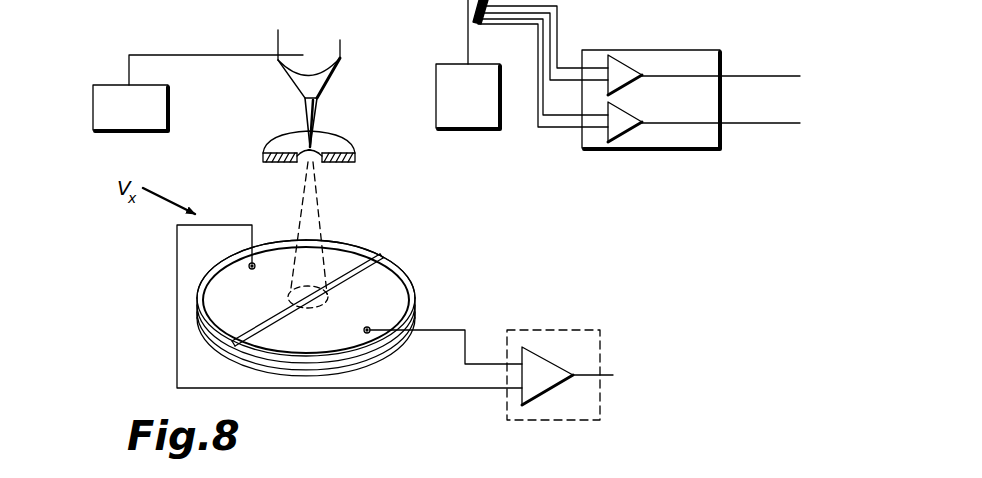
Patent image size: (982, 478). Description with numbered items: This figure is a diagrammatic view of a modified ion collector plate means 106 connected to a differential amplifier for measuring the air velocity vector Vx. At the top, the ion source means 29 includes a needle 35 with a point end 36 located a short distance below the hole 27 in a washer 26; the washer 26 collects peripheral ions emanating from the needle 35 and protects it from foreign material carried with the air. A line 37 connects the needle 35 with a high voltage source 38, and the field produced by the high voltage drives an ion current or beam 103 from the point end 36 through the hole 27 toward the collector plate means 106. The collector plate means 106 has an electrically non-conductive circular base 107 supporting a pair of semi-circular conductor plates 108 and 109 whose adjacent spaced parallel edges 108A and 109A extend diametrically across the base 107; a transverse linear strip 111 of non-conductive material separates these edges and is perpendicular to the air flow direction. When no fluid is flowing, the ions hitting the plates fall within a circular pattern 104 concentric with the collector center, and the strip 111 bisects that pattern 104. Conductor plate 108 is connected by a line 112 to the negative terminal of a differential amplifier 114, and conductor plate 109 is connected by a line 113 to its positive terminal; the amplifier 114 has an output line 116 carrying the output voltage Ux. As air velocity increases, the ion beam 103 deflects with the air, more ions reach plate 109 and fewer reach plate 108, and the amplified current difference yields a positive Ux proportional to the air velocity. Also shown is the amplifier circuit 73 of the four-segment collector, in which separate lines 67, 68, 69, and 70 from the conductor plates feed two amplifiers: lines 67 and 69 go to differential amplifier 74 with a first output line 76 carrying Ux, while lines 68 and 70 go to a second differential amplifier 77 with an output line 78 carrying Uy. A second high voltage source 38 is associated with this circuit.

The washer 26 is at (288, 135).
The hole 27 is at (300, 160).
The ion source means 29 is at (343, 50).
The needle 35 is at (318, 99).
The point end 36 is at (322, 146).
The line 37 is at (212, 55).
The high voltage source 38 is at (122, 132).
The line 67 is at (560, 13).
The line 68 is at (562, 116).
The line 69 is at (561, 71).
The line 70 is at (561, 128).
The amplifier circuit 73 is at (652, 49).
The differential amplifier 74 is at (628, 80).
The first output line 76 is at (759, 75).
The second differential amplifier 77 is at (628, 125).
The output line 78 is at (757, 125).
The ion beam 103 is at (313, 180).
The circular pattern 104 is at (327, 301).
The ion collector plate means 106 is at (427, 259).
The circular base 107 is at (293, 378).
The conductor plate 108 is at (341, 248).
The edge 108A is at (264, 321).
The conductor plate 109 is at (395, 296).
The edge 109A is at (270, 322).
The transverse linear strip 111 is at (376, 262).
The line 112 is at (177, 263).
The line 113 is at (455, 333).
The differential amplifier 114 is at (535, 360).
The output line 116 is at (608, 372).